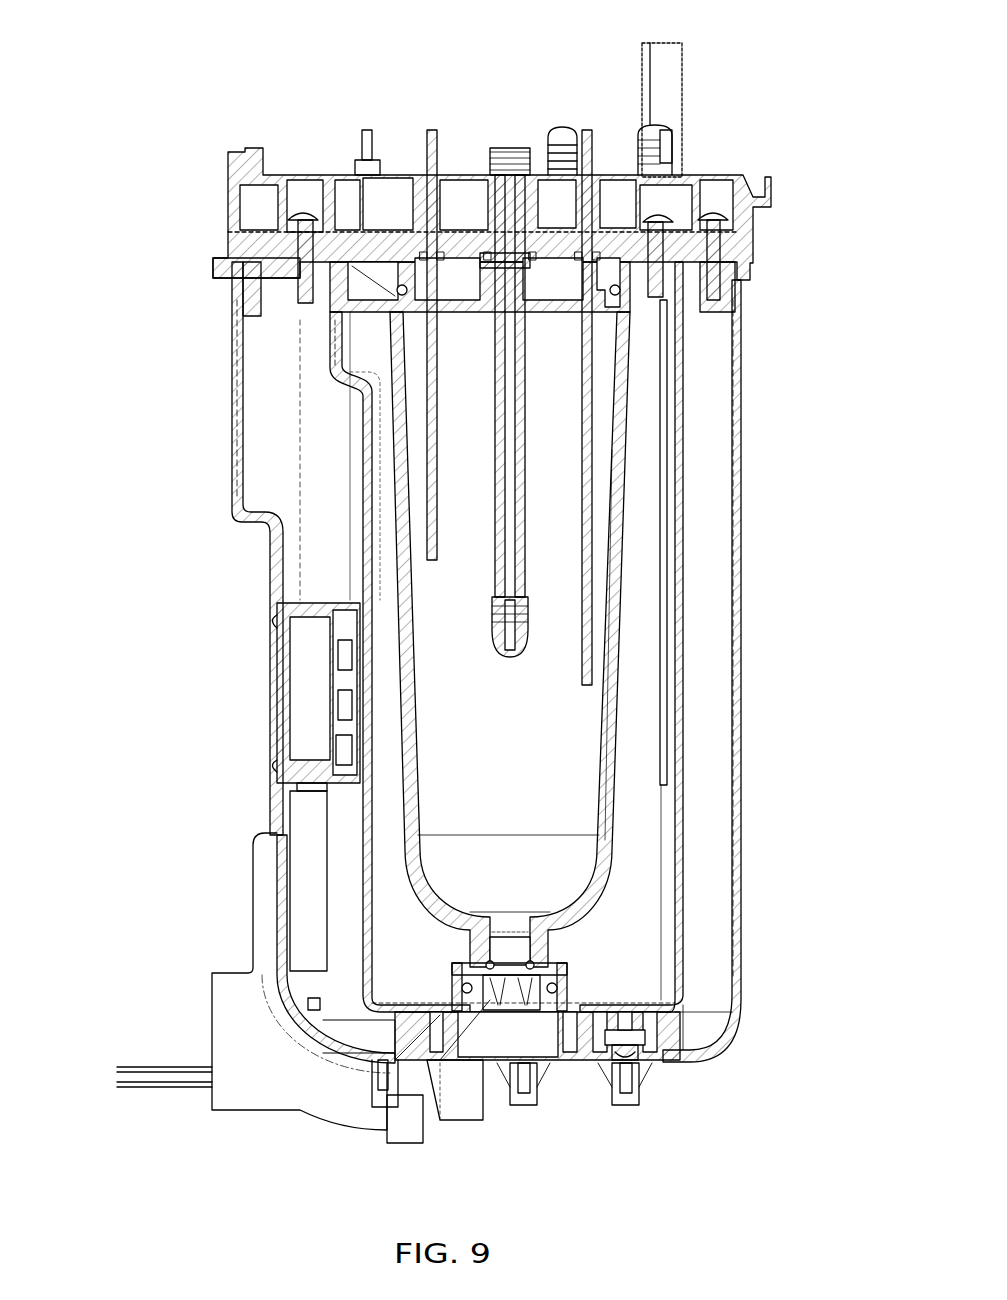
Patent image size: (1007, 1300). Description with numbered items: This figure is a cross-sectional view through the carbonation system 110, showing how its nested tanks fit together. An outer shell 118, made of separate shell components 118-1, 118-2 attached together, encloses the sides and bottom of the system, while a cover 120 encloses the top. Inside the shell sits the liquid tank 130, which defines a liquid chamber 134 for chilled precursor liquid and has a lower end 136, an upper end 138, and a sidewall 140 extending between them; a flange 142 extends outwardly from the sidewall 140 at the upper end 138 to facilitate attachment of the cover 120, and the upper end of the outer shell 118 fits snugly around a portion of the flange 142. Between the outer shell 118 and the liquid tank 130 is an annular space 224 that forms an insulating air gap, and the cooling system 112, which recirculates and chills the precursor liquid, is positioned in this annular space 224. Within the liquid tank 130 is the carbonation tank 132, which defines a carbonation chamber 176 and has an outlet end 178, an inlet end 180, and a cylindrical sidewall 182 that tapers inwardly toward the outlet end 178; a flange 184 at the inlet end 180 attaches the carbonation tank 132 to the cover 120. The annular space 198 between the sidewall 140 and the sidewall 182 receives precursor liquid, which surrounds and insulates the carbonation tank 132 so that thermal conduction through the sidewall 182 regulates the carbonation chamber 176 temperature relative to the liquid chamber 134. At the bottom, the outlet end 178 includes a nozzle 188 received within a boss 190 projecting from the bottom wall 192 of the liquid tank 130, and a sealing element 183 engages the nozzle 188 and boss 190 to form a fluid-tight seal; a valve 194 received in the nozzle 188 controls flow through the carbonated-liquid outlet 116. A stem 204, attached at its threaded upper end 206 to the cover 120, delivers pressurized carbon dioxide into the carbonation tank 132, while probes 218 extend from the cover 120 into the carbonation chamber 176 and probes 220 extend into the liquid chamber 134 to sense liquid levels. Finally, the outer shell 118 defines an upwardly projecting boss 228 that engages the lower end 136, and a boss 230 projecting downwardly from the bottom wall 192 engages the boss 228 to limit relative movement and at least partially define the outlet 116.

The carbonation system 110 is at (125, 51).
The cooling system 112 is at (256, 695).
The carbonated-liquid outlet 116 is at (505, 1047).
The outer shell 118 is at (748, 823).
The shell component 118-1 is at (250, 480).
The shell component 118-2 is at (742, 627).
The cover 120 is at (228, 186).
The liquid tank 130 is at (694, 874).
The carbonation tank 132 is at (601, 903).
The liquid chamber 134 is at (523, 968).
The lower end 136 is at (683, 1014).
The upper end 138 is at (318, 332).
The sidewall 140 is at (690, 468).
The flange 142 is at (236, 266).
The carbonation chamber 176 is at (510, 639).
The outlet end 178 is at (405, 907).
The inlet end 180 is at (373, 326).
The sidewall 182 is at (630, 568).
The sealing element 183 is at (458, 985).
The flange 184 is at (236, 232).
The nozzle 188 is at (482, 950).
The boss 190 is at (470, 962).
The bottom wall 192 is at (400, 1020).
The valve 194 is at (508, 1040).
The annular space 198 is at (635, 707).
The stem 204 is at (703, 370).
The upper end 206 is at (512, 148).
The probes 218 is at (428, 490).
The probes 220 is at (668, 770).
The annular space 224 is at (321, 460).
The boss 228 is at (447, 1050).
The boss 230 is at (623, 1047).